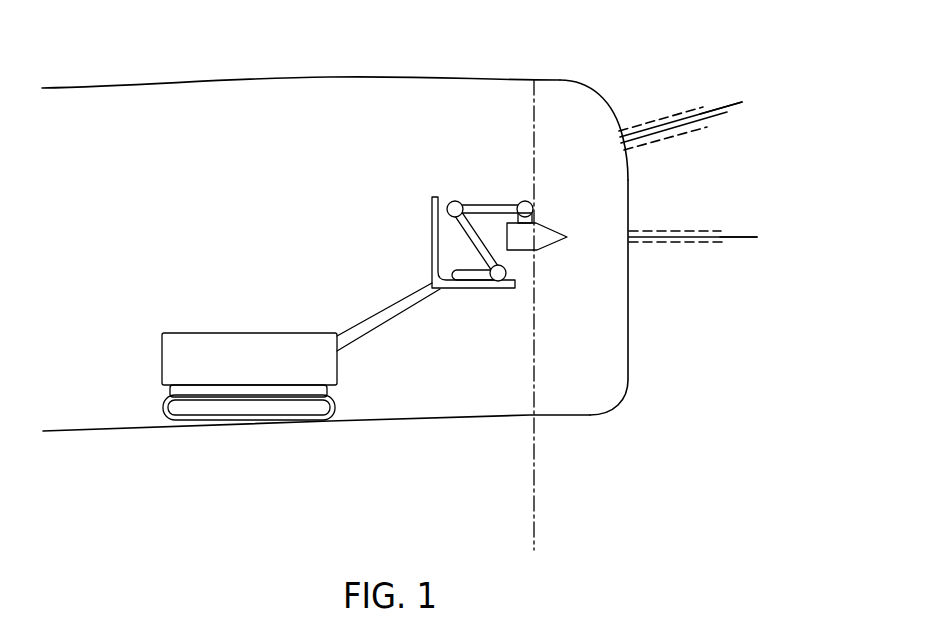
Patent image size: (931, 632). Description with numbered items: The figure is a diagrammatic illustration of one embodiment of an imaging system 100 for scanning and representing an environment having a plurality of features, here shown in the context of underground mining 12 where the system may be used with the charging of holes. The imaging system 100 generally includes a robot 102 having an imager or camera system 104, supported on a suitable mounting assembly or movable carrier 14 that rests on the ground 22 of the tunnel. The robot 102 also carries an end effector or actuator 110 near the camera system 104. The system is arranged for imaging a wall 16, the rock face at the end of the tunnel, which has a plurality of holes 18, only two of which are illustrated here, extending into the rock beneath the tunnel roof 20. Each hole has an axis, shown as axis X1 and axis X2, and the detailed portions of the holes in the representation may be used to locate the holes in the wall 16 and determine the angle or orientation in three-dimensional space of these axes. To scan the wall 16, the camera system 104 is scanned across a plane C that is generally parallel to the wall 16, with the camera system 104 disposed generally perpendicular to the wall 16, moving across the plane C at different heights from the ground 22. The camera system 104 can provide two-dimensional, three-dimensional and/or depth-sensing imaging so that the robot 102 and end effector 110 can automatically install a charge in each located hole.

The underground mining 12 is at (336, 37).
The movable carrier 14 is at (250, 333).
The wall 16 is at (627, 347).
The holes 18 is at (675, 117).
The tunnel roof 20 is at (577, 88).
The ground 22 is at (481, 414).
The imaging system 100 is at (386, 287).
The robot 102 is at (492, 203).
The camera system 104 is at (535, 216).
The end effector 110 is at (556, 250).
The plane C is at (533, 303).
The axis X1 is at (752, 233).
The axis X2 is at (723, 108).